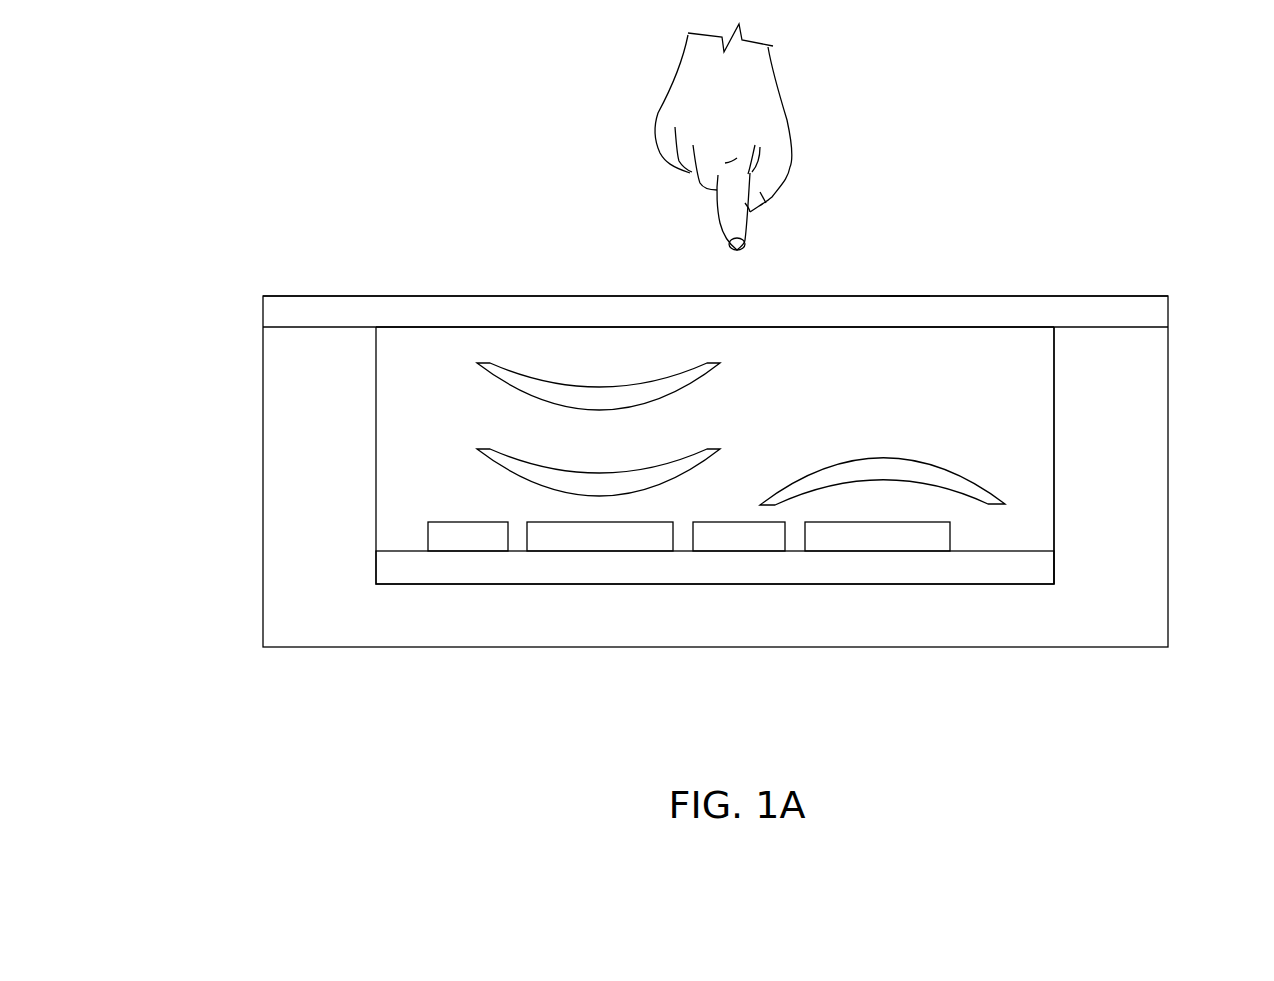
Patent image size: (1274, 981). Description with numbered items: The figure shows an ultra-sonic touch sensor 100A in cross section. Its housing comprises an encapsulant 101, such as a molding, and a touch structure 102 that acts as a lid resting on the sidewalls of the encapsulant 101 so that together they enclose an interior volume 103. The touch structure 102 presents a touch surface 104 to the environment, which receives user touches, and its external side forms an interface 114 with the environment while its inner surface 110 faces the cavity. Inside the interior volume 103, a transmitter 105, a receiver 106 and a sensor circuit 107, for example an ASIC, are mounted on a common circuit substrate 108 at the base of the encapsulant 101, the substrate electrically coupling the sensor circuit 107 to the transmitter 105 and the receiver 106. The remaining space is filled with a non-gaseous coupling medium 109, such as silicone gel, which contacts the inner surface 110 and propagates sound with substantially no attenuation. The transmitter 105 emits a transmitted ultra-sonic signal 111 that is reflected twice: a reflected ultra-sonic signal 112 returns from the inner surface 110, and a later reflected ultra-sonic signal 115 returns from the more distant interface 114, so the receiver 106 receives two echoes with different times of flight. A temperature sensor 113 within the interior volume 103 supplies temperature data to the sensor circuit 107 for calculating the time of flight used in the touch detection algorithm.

The ultra-sonic touch sensor 100A is at (180, 98).
The encapsulant 101 is at (343, 455).
The touch structure 102 is at (1170, 313).
The interior volume 103 is at (420, 395).
The touch surface 104 is at (990, 296).
The transmitter 105 is at (873, 552).
The receiver 106 is at (598, 552).
The sensor circuit 107 is at (730, 552).
The common circuit substrate 108 is at (1000, 567).
The coupling medium 109 is at (1010, 450).
The inner surface 110 is at (433, 327).
The transmitted ultra-sonic signal 111 is at (907, 458).
The reflected ultra-sonic signal 112 is at (507, 480).
The temperature sensor 113 is at (427, 538).
The interface 114 is at (906, 296).
The reflected ultra-sonic signal 115 is at (477, 366).